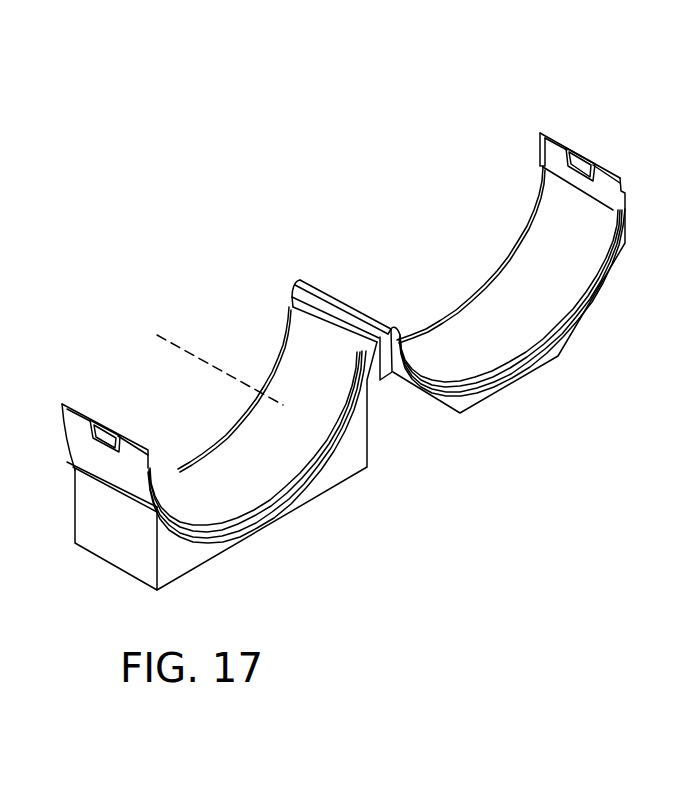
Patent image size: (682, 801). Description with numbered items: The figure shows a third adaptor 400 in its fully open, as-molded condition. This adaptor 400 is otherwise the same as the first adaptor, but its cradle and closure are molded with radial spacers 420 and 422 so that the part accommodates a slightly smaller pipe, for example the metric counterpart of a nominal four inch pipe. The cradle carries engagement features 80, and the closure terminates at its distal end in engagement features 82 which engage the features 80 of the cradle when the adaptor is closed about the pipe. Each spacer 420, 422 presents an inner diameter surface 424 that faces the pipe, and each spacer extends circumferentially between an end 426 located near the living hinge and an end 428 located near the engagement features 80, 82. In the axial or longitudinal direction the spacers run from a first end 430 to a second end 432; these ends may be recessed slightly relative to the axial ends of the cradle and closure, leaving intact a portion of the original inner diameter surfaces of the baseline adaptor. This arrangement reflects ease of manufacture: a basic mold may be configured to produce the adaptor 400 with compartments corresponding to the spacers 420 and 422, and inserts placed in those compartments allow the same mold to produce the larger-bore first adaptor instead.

The adaptor 400 is at (284, 600).
The engagement features of the cradle 80 is at (74, 395).
The engagement features of the closure 82 is at (588, 135).
The radial spacer of the cradle 420 is at (228, 465).
The radial spacer of the closure 422 is at (490, 312).
The inner diameter surface 424 is at (321, 392).
The spacer end proximate the hinge 426 is at (312, 323).
The spacer end proximate the engagement features 428 is at (543, 166).
The first axial end 430 is at (244, 421).
The second axial end 432 is at (302, 485).